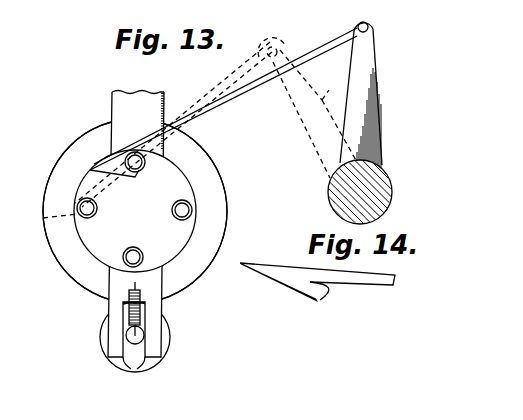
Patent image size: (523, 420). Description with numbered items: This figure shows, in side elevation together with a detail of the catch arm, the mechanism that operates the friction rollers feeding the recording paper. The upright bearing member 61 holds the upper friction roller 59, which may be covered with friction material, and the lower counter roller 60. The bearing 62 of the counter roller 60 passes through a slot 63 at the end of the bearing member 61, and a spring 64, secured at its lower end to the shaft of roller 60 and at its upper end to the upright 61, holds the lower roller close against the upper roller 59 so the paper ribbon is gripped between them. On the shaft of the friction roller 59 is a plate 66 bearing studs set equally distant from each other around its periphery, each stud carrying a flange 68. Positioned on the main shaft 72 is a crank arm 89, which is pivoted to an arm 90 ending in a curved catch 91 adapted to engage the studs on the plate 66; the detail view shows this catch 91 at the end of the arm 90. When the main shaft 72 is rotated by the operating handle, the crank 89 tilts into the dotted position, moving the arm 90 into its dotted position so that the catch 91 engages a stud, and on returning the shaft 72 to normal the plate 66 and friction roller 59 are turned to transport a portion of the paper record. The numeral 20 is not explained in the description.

In FIG. 13, the frame 20 is at (240, 5).
In FIG. 13, the friction roller 59 is at (72, 258).
In FIG. 13, the counter roller 60 is at (172, 338).
In FIG. 13, the bearing member 61 is at (128, 98).
In FIG. 13, the bearing 62 is at (126, 334).
In FIG. 13, the slot 63 is at (134, 369).
In FIG. 13, the spring 64 is at (140, 297).
In FIG. 13, the plate 66 is at (180, 188).
In FIG. 13, the flange 68 is at (143, 166).
In FIG. 13, the main shaft 72 is at (329, 201).
In FIG. 13, the crank arm 89 is at (360, 77).
In FIG. 13, the arm 90 is at (313, 51).
In FIG. 14, the arm 90 is at (373, 285).
In FIG. 13, the curved catch 91 is at (124, 166).
In FIG. 14, the curved catch 91 is at (323, 302).